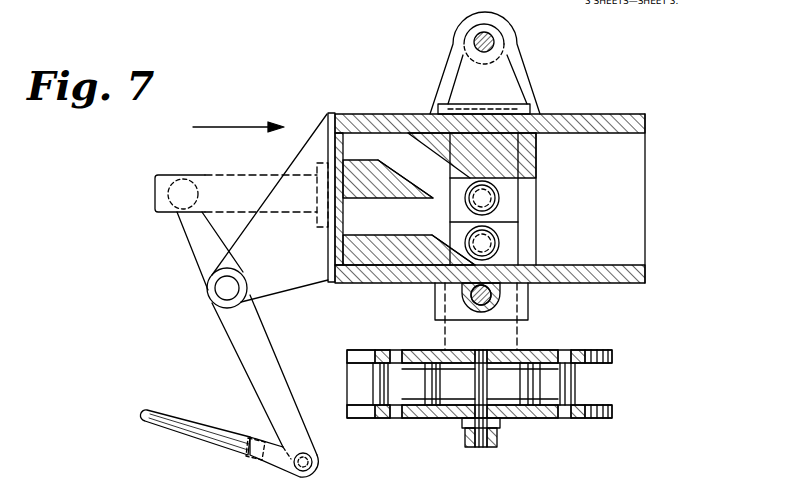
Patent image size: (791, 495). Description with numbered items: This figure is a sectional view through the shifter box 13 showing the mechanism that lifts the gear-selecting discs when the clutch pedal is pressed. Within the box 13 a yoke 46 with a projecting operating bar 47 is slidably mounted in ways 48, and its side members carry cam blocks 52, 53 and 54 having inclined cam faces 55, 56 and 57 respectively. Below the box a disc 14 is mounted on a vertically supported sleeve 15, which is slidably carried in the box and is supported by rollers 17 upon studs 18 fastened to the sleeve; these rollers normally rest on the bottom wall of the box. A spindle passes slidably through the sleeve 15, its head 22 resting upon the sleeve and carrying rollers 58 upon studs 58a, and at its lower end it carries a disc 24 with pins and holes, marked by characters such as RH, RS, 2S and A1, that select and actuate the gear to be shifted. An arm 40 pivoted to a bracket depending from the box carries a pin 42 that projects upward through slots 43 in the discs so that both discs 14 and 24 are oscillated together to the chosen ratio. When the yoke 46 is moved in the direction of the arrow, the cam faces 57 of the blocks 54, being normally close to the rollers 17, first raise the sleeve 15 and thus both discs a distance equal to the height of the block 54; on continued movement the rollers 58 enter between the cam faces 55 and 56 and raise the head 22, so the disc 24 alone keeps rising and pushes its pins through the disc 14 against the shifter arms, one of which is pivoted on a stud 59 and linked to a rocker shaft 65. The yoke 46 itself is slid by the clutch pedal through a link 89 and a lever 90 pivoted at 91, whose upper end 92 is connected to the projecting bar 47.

The shifter box 13 is at (496, 199).
The disc 14 is at (495, 398).
The sleeve 15 is at (507, 337).
The rollers 17 is at (502, 243).
The studs 18 is at (493, 252).
The head 22 is at (510, 188).
The disc 24 is at (612, 412).
The end spacer 2S is at (372, 382).
The arm 40 is at (463, 438).
The pin 42 is at (447, 420).
The slot 43 is at (447, 350).
The yoke 46 is at (333, 175).
The operating bar 47 is at (217, 180).
The ways 48 is at (370, 128).
The cam block 52 is at (508, 150).
The cam block 53 is at (379, 186).
The cam block 54 is at (415, 252).
The inclined cam face 55 is at (533, 113).
The inclined cam face 56 is at (388, 168).
The inclined cam face 57 is at (452, 243).
The rollers 58 is at (497, 197).
The studs 58a is at (498, 205).
The stud 59 is at (500, 300).
The rocker shaft 65 is at (495, 42).
The link 89 is at (177, 425).
The lever 90 is at (242, 332).
The pivot 91 is at (222, 288).
The upper end 92 is at (195, 222).
The roller A1 is at (565, 385).
The roller RH is at (392, 352).
The roller RS is at (435, 368).